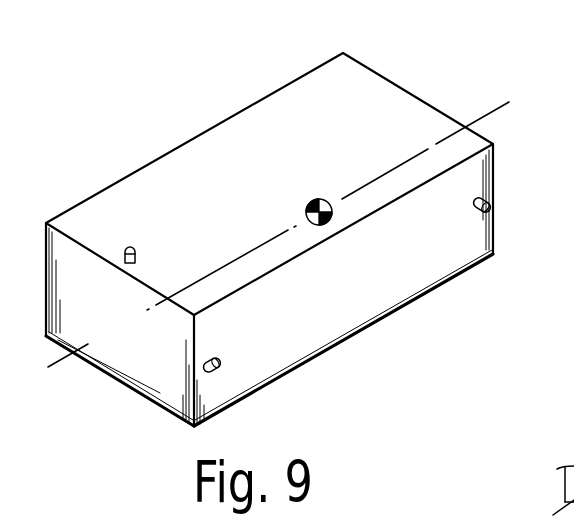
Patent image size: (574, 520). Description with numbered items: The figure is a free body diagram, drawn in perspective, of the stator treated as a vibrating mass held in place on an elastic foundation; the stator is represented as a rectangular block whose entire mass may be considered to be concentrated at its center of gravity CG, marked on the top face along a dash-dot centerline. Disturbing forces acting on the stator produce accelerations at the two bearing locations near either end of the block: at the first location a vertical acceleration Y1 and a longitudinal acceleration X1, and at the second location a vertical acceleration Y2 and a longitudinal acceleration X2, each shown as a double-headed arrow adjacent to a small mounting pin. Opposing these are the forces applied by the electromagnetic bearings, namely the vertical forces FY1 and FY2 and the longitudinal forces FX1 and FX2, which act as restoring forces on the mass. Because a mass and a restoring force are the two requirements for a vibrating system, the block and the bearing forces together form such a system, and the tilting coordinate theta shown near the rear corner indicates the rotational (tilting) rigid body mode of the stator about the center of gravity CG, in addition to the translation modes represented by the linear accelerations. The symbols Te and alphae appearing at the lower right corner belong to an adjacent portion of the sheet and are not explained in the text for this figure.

The center of gravity CG is at (318, 201).
The acceleration Y1 is at (130, 245).
The force FY1 is at (169, 248).
The acceleration Y2 is at (397, 88).
The force FY2 is at (370, 112).
The tilting angle theta is at (394, 103).
The acceleration X1 is at (228, 377).
The force FX1 is at (252, 348).
The acceleration X2 is at (495, 212).
The force FX2 is at (453, 235).
The engine torque Te is at (562, 411).
The engine angular acceleration alphae is at (550, 435).